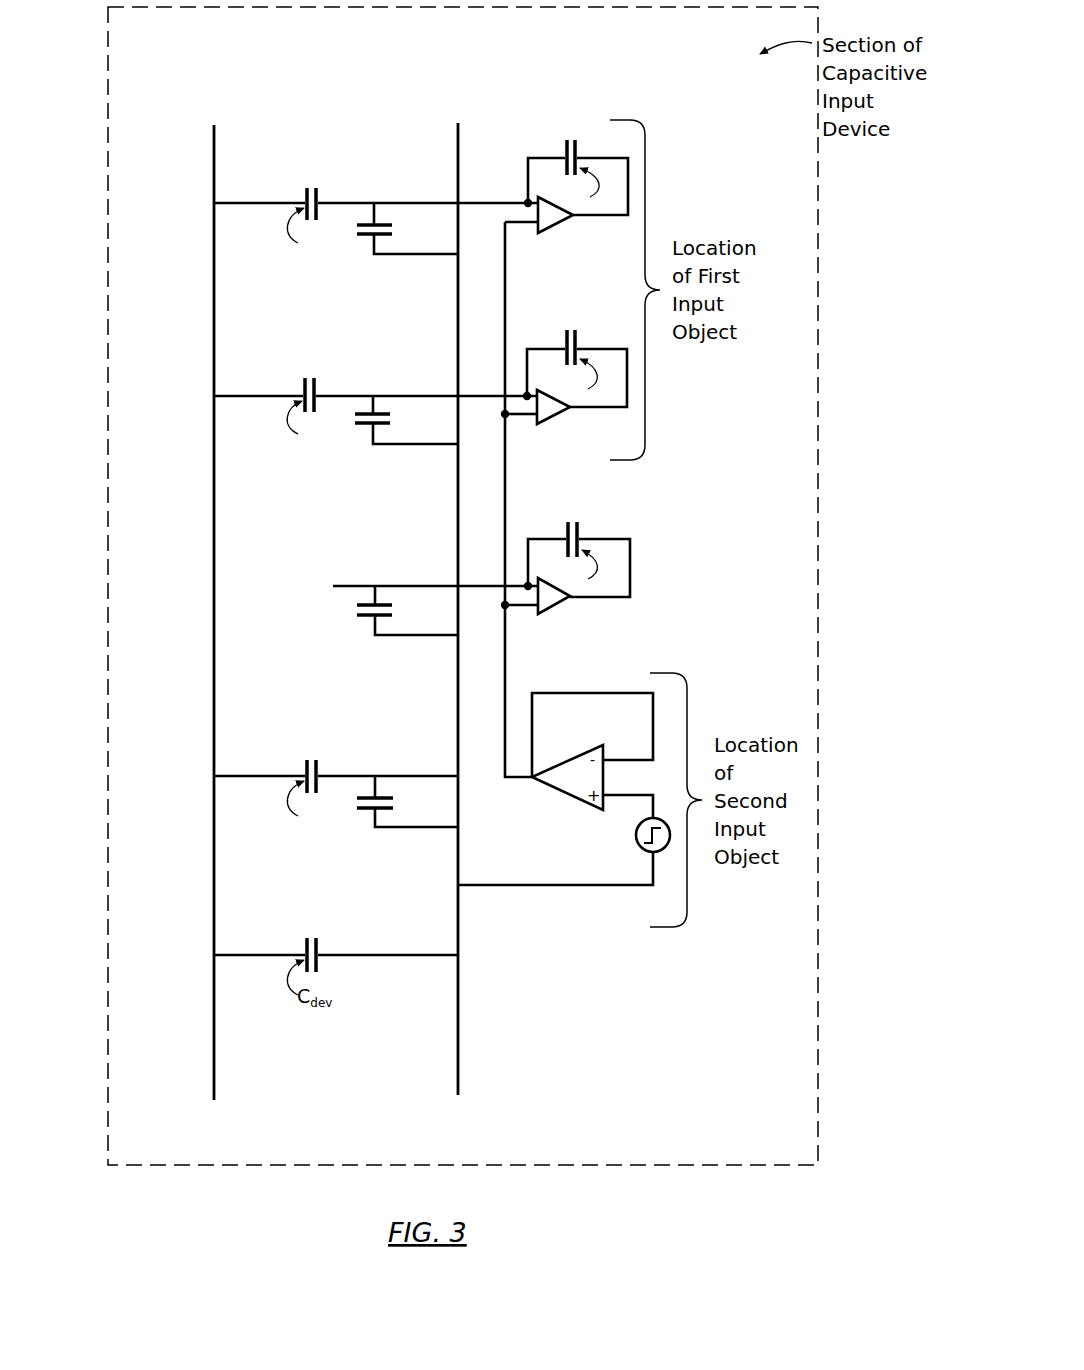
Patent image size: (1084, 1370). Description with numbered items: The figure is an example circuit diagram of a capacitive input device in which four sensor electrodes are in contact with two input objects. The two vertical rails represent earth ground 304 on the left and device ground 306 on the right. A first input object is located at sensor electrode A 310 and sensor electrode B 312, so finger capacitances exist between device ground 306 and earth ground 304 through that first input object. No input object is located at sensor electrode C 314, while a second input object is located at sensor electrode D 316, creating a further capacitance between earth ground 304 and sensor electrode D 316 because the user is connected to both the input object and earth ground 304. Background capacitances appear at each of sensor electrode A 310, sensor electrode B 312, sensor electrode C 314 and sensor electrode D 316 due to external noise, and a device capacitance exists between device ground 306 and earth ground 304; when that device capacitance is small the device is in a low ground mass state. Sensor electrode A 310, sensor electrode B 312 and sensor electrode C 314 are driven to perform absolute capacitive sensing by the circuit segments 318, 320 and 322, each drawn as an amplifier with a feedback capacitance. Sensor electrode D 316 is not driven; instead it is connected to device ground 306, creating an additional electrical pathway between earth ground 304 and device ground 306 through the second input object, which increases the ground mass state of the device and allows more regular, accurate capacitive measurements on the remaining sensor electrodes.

The earth ground 304 is at (216, 108).
The device ground 306 is at (458, 108).
The sensor electrode A 310 is at (413, 283).
The sensor electrode B 312 is at (400, 478).
The sensor electrode C 314 is at (403, 656).
The sensor electrode D 316 is at (418, 849).
The circuit segment 318 is at (549, 249).
The circuit segment 320 is at (556, 438).
The circuit segment 322 is at (562, 617).